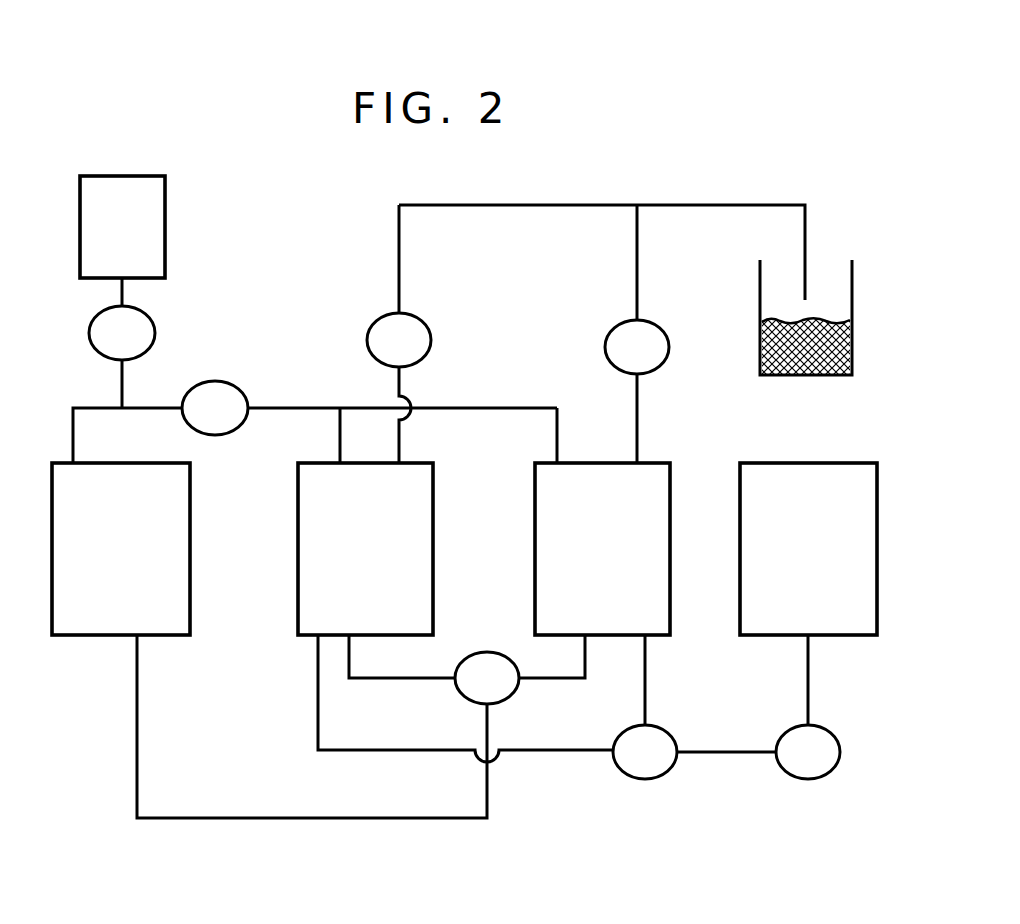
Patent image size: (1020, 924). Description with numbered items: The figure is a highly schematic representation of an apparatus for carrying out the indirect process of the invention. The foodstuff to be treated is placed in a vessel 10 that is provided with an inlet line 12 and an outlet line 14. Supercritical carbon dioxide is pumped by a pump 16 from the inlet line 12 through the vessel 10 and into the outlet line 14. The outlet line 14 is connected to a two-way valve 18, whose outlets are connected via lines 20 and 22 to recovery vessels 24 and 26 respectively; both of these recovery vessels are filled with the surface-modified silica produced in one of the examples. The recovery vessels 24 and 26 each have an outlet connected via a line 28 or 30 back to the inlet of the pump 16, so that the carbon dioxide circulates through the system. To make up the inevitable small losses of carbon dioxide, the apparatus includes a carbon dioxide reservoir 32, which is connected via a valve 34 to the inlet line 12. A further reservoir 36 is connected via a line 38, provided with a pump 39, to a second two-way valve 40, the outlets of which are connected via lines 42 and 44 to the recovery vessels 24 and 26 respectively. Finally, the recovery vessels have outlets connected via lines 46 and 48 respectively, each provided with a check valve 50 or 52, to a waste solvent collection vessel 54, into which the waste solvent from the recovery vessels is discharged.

The vessel 10 is at (138, 566).
The inlet line 12 is at (73, 420).
The outlet line 14 is at (137, 716).
The pump 16 is at (240, 384).
The two-way valve 18 is at (500, 700).
The line 20 is at (434, 682).
The line 22 is at (552, 682).
The recovery vessel 24 is at (386, 566).
The recovery vessel 26 is at (624, 566).
The line 28 is at (340, 444).
The line 30 is at (557, 444).
The carbon dioxide reservoir 32 is at (144, 236).
The valve 34 is at (145, 318).
The reservoir 36 is at (829, 566).
The line 38 is at (808, 684).
The pump 39 is at (783, 732).
The two-way valve 40 is at (668, 772).
The line 42 is at (318, 694).
The line 44 is at (645, 684).
The line 46 is at (400, 384).
The line 48 is at (637, 418).
The check valve 50 is at (426, 328).
The check valve 52 is at (652, 322).
The waste solvent collection vessel 54 is at (760, 354).